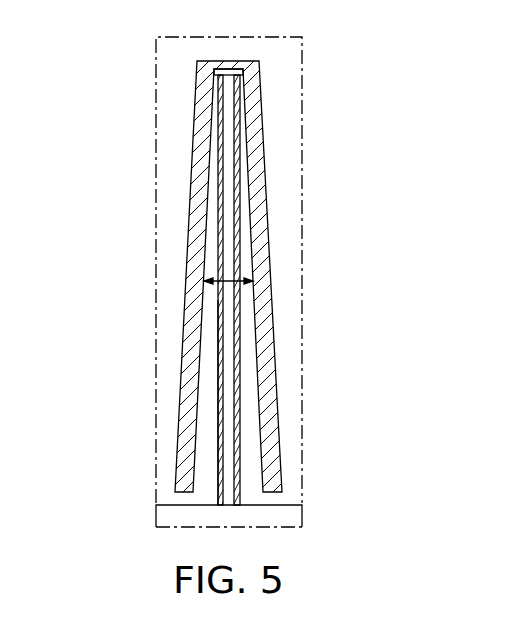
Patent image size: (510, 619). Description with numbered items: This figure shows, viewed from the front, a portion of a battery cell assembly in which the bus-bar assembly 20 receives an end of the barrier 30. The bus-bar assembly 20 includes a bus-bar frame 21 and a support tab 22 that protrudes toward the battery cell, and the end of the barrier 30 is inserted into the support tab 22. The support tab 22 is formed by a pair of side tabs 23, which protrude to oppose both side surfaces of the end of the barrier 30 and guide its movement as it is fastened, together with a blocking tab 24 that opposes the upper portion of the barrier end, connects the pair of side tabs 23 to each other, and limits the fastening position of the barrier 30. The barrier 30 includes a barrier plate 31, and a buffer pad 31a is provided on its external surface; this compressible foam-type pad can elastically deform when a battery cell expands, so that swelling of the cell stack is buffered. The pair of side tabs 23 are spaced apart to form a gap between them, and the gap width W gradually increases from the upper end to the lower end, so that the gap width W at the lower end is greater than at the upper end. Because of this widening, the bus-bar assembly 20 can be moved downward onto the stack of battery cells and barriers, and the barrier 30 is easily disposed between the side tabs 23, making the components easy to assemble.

The bus-bar assembly 20 is at (307, 270).
The bus-bar frame 21 is at (293, 150).
The support tab 22 is at (292, 268).
The side tab 23 is at (257, 105).
The blocking tab 24 is at (230, 65).
The barrier 30 is at (167, 301).
The barrier plate 31 is at (193, 301).
The buffer pad 31a is at (77, 388).
The gap width W is at (230, 253).